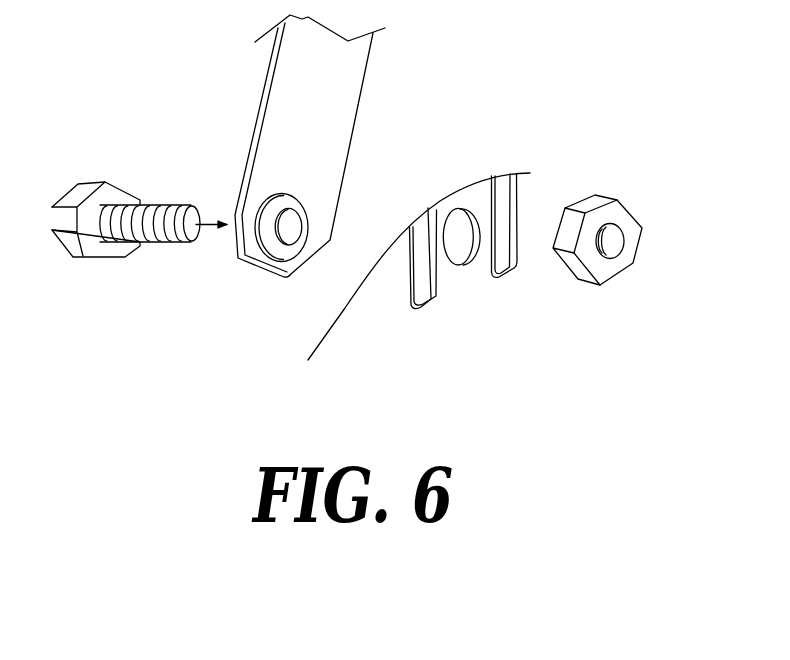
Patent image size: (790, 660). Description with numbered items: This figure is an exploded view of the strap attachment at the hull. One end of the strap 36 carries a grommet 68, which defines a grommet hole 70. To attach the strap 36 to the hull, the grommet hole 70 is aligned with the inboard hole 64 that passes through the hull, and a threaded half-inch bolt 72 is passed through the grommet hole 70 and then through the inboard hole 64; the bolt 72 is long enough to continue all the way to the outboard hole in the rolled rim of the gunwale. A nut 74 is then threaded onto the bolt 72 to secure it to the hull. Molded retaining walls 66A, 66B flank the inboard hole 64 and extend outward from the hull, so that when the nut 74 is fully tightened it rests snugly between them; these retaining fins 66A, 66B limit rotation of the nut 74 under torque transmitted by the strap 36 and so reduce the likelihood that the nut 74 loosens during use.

The strap 36 is at (353, 117).
The inboard hole 64 is at (461, 250).
The retaining wall 66A is at (396, 287).
The retaining wall 66B is at (504, 276).
The grommet 68 is at (308, 212).
The grommet hole 70 is at (293, 234).
The bolt 72 is at (147, 205).
The nut 74 is at (641, 229).